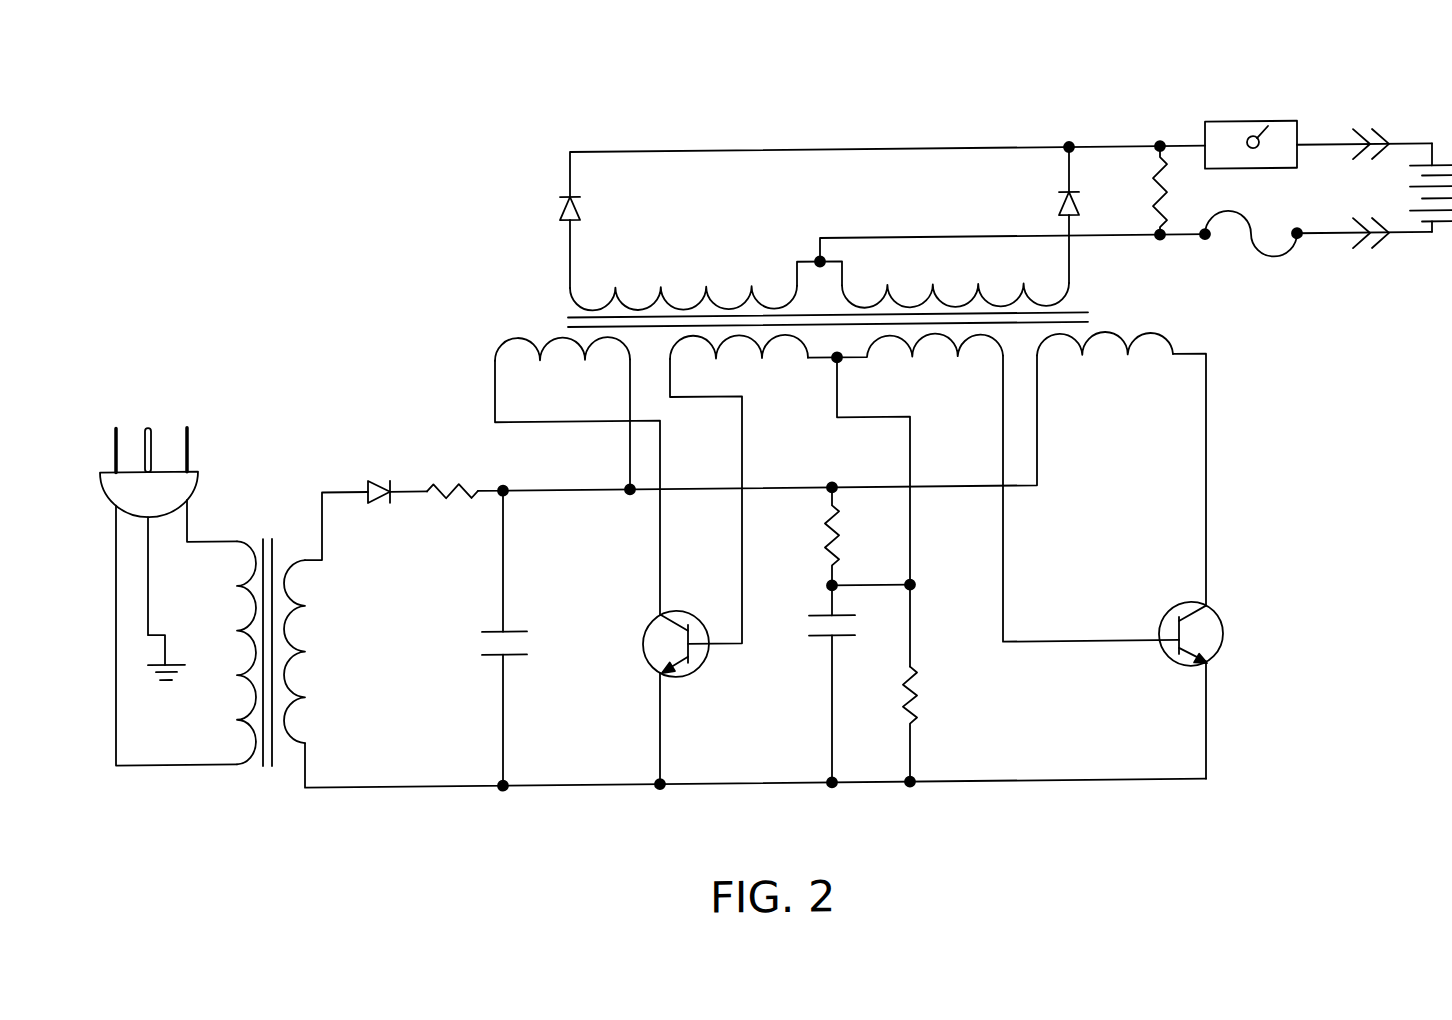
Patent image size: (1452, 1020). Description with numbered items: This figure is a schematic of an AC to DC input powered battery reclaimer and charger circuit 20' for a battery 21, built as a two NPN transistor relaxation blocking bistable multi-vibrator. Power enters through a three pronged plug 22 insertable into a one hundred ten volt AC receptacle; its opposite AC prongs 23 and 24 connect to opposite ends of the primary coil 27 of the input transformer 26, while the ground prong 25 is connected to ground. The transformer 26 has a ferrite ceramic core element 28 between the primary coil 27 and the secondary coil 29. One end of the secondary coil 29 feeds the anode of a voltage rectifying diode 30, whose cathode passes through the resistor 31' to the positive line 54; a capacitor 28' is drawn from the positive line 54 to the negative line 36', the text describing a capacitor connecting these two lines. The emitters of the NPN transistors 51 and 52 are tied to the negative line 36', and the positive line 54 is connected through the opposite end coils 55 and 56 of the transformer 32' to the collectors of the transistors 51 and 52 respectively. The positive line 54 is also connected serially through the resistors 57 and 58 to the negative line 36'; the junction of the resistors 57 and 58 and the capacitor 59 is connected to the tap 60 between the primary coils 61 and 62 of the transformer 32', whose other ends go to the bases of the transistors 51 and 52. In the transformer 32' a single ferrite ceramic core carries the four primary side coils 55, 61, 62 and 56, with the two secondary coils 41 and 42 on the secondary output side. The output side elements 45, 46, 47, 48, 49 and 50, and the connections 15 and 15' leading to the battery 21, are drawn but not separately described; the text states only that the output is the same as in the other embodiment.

The connector (negative lead) 15 is at (1367, 258).
The connector (positive lead) 15' is at (1378, 112).
The battery charger circuit 20' is at (773, 469).
The battery 21 is at (1410, 194).
The three pronged plug 22 is at (182, 486).
The AC prong 23 is at (115, 422).
The AC prong 24 is at (190, 428).
The ground prong 25 is at (150, 420).
The transformer 26 is at (275, 671).
The primary coil 27 is at (233, 670).
The ferrite ceramic core element 28 is at (285, 619).
The filter capacitor 28' is at (467, 638).
The secondary coil 29 is at (306, 647).
The voltage rectifying diode 30 is at (371, 480).
The resistor 31' is at (449, 521).
The transformer 32' is at (784, 302).
The negative line 36' is at (755, 803).
The secondary coil 41 is at (707, 289).
The secondary coil 42 is at (1072, 283).
The center tap 45 is at (818, 262).
The fuse 46 is at (1267, 264).
The rectifier diode 47 is at (560, 210).
The rectifier diode 48 is at (1060, 210).
The switch 49 is at (1210, 129).
The resistor 50 is at (1157, 199).
The NPN transistor 51 is at (643, 651).
The NPN transistor 52 is at (1167, 619).
The positive line 54 is at (568, 490).
The coil 55 is at (493, 353).
The coil 56 is at (1171, 349).
The resistor 57 is at (823, 540).
The resistor 58 is at (920, 706).
The capacitor 59 is at (823, 641).
The tap 60 is at (832, 366).
The primary coil 61 is at (717, 359).
The primary coil 62 is at (915, 359).